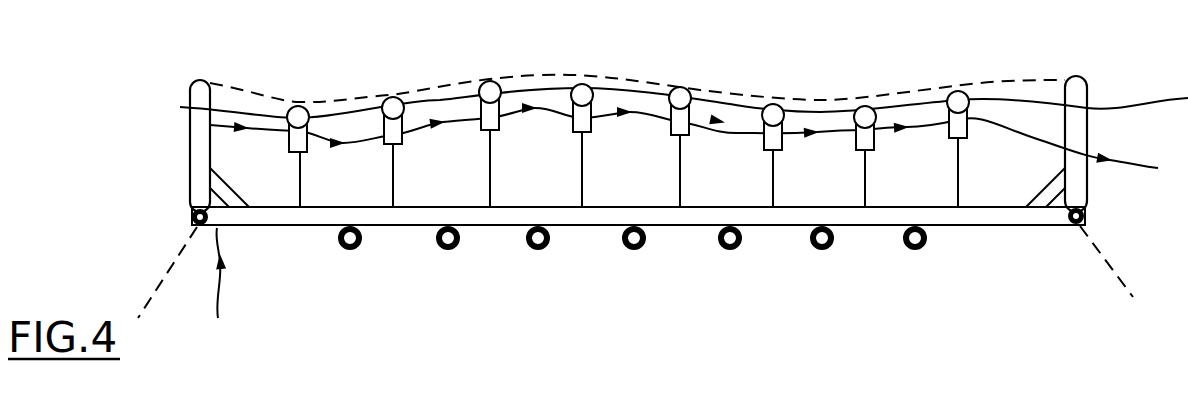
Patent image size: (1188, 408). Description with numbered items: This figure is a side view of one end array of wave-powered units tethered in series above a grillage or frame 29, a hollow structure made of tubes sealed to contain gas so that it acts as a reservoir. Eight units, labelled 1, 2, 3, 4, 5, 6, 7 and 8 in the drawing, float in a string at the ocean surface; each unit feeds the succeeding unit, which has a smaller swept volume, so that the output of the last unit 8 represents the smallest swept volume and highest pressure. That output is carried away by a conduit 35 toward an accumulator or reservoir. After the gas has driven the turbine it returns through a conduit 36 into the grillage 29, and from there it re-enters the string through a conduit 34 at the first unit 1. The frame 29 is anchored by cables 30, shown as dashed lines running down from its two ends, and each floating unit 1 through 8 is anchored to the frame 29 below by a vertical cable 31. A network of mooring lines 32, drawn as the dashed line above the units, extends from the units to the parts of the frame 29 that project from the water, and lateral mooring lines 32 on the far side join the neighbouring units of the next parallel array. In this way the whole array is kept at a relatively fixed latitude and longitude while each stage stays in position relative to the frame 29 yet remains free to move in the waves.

The first sensor unit 1 is at (298, 105).
The second sensor unit 2 is at (393, 97).
The third sensor unit 3 is at (490, 80).
The fourth sensor unit 4 is at (582, 83).
The fifth sensor unit 5 is at (680, 87).
The sixth sensor unit 6 is at (773, 104).
The seventh sensor unit 7 is at (865, 106).
The eighth sensor unit 8 is at (958, 91).
The grillage 29 is at (1000, 225).
The cables 30 is at (172, 268).
The vertical cables 31 is at (300, 176).
The mooring lines 32 is at (248, 83).
The conduit 34 is at (255, 183).
The conduit 35 is at (1140, 170).
The conduit 36 is at (227, 290).